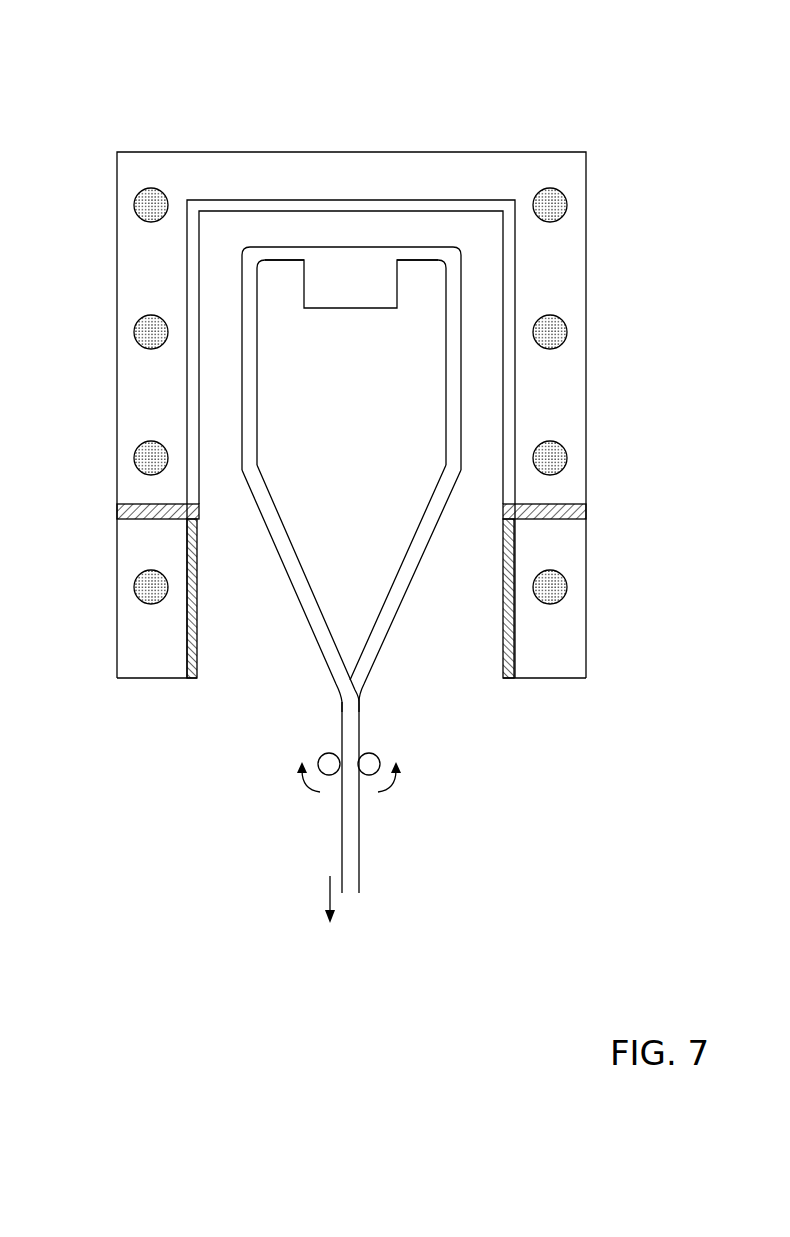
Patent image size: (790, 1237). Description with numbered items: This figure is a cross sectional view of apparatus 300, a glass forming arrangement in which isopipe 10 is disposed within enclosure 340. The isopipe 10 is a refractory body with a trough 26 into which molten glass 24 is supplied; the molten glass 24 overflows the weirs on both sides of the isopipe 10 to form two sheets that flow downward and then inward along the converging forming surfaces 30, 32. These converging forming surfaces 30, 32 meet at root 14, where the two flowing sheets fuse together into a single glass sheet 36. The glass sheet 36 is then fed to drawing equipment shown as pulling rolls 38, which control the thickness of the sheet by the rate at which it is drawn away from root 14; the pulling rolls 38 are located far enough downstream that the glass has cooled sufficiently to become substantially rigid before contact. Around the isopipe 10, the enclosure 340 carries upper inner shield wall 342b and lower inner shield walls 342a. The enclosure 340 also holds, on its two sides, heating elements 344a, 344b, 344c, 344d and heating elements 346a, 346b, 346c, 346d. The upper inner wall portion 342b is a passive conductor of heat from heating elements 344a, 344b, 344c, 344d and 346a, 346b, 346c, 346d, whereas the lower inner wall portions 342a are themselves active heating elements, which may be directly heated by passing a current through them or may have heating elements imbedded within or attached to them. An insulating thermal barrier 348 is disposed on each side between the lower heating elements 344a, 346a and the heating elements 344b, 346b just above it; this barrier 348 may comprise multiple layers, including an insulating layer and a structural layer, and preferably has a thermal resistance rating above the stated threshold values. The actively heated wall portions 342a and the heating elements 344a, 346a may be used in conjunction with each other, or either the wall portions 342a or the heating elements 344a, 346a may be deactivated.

The apparatus 300 is at (183, 82).
The enclosure 340 is at (472, 146).
The lower inner shield wall 342a is at (200, 639).
The upper inner shield wall 342b is at (208, 365).
The heating element 344a is at (550, 605).
The heating element 344b is at (558, 447).
The heating element 344c is at (566, 328).
The heating element 344d is at (553, 222).
The heating element 346a is at (152, 604).
The heating element 346b is at (137, 450).
The heating element 346c is at (135, 326).
The heating element 346d is at (148, 222).
The insulating thermal barrier 348 is at (130, 520).
The isopipe 10 is at (351, 285).
The molten glass 24 is at (284, 260).
The trough 26 is at (375, 247).
The converging forming surface 32 is at (284, 532).
The converging forming surface 30 is at (430, 532).
The root 14 is at (362, 696).
The glass sheet 36 is at (357, 822).
The pulling rolls 38 is at (318, 757).